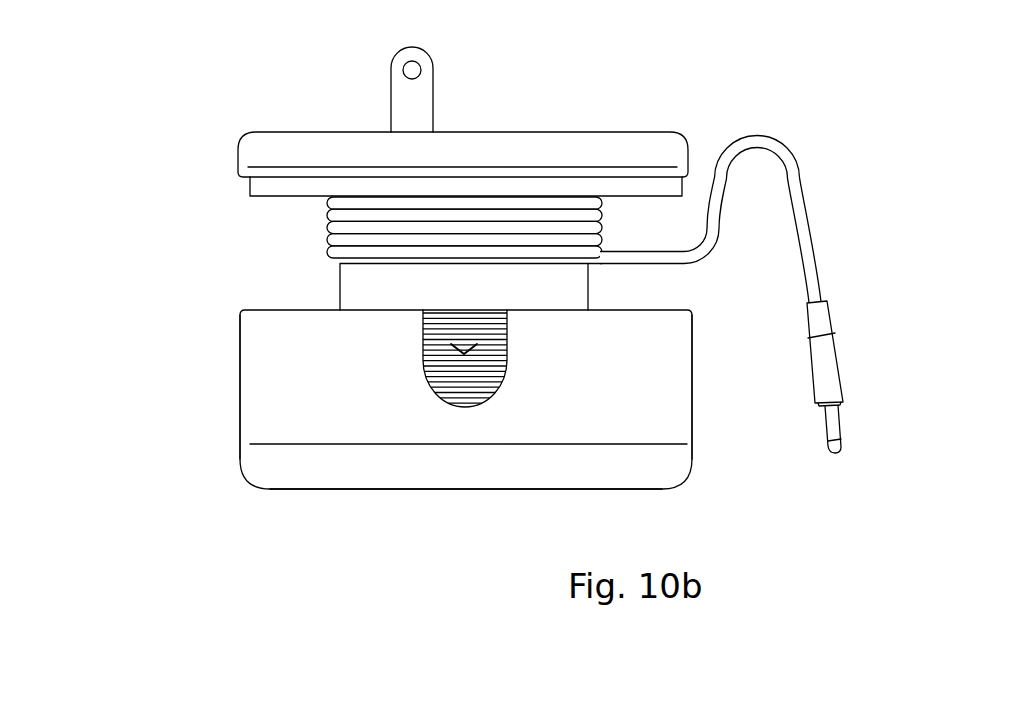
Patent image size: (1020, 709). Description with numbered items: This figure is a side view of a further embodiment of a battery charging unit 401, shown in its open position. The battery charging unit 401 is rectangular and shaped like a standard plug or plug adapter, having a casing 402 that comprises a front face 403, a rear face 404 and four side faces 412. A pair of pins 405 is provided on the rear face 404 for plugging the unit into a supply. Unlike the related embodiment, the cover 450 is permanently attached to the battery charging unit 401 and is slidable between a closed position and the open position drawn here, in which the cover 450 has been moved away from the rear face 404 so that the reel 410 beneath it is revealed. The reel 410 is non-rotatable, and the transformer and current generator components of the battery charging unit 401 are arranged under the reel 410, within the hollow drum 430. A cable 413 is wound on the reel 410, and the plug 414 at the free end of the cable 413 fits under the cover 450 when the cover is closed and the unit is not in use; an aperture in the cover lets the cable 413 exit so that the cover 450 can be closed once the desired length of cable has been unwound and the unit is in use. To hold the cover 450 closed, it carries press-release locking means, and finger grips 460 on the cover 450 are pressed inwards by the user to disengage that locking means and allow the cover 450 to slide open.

The battery charging unit 401 is at (703, 92).
The casing 402 is at (667, 417).
The front face 403 is at (315, 490).
The rear face 404 is at (312, 132).
The pins 405 is at (420, 97).
The reel 410 is at (355, 292).
The side faces 412 is at (692, 330).
The cable 413 is at (775, 134).
The plug 414 is at (830, 357).
The hollow drum 430 is at (355, 272).
The cover 450 is at (463, 468).
The finger grips 460 is at (443, 383).